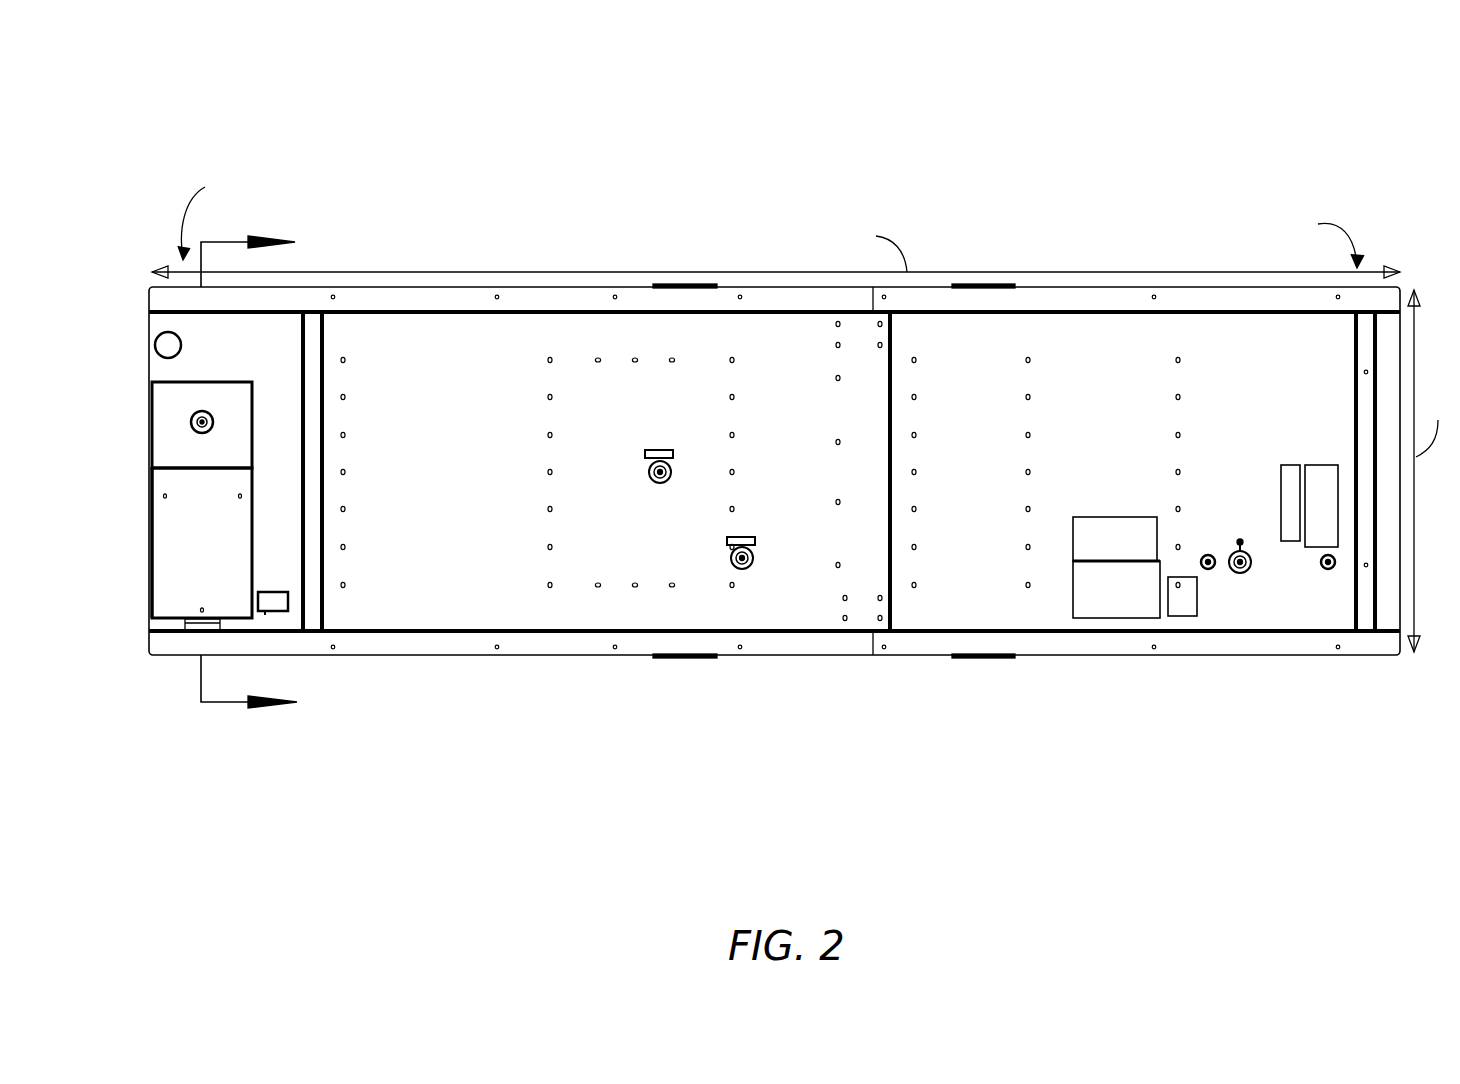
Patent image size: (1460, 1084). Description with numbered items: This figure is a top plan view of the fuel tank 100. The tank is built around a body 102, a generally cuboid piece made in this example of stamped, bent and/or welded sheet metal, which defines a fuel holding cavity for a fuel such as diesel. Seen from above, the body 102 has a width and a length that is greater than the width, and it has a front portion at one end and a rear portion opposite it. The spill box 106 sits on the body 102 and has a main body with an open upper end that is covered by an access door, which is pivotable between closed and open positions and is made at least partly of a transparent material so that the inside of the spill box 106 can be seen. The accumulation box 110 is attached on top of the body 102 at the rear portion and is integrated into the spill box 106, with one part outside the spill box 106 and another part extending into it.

The fuel tank 100 is at (213, 90).
The body 102 is at (810, 475).
The spill box 106 is at (202, 549).
The accumulation box 110 is at (222, 458).